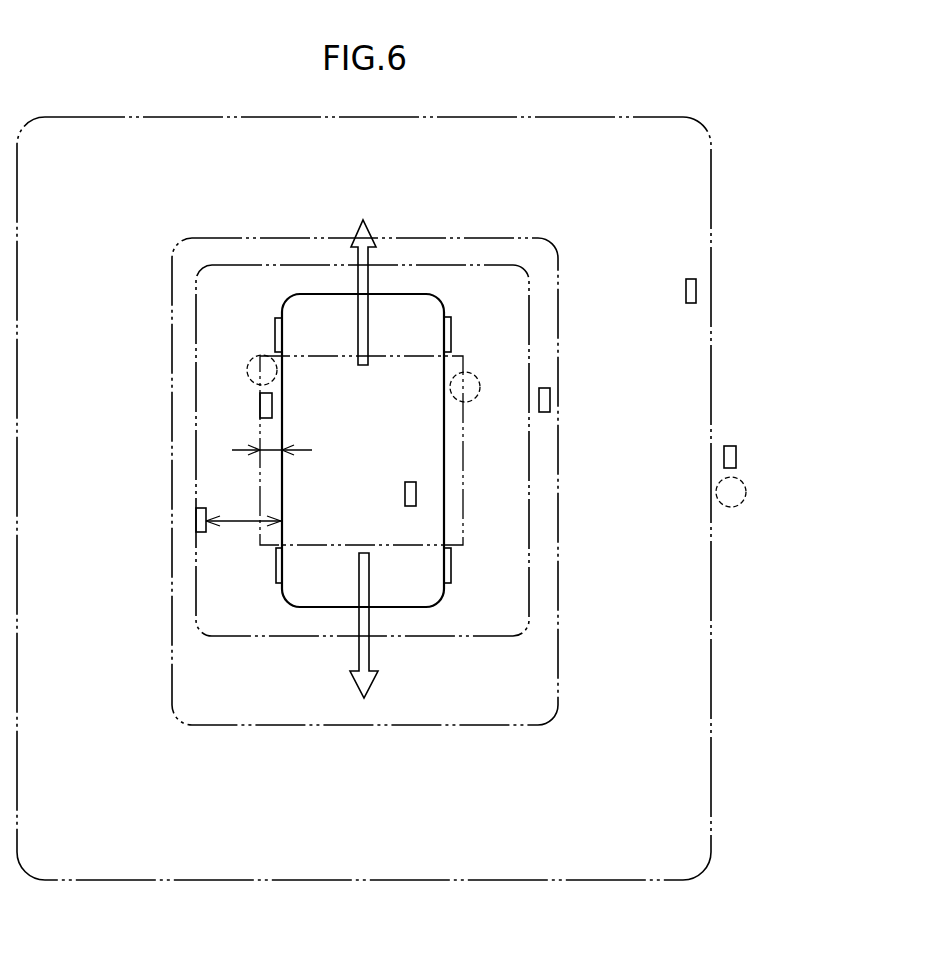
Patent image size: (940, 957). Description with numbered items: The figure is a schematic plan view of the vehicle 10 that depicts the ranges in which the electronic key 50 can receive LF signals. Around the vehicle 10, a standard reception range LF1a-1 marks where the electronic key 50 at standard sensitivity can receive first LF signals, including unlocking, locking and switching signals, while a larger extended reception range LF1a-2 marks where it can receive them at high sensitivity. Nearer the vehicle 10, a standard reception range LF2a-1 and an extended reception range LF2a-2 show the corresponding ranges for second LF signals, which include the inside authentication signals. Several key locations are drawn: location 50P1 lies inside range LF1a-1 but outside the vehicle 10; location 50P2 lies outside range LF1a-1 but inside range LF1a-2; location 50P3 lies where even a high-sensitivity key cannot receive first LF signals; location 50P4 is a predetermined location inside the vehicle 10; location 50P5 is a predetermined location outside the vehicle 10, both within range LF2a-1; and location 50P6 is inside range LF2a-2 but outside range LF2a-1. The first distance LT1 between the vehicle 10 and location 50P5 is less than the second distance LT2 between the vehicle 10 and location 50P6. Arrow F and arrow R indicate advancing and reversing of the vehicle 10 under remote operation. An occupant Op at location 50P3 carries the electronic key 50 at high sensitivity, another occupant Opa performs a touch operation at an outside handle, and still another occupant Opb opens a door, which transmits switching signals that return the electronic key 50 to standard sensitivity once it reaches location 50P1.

The vehicle 10 is at (402, 305).
The standard reception range LF1a-1 is at (558, 334).
The extended reception range LF1a-2 is at (711, 183).
The standard reception range LF2a-1 is at (377, 475).
The extended reception range LF2a-2 is at (512, 637).
The electronic key 50 is at (467, 424).
The location 50P1 is at (550, 400).
The location 50P2 is at (696, 289).
The location 50P3 is at (736, 457).
The location 50P4 is at (416, 493).
The location 50P5 is at (258, 407).
The location 50P6 is at (196, 521).
The occupant Opa is at (473, 376).
The occupant Opb is at (256, 357).
The occupant Op is at (745, 498).
The first distance LT1 is at (273, 455).
The second distance LT2 is at (240, 525).
The arrow F is at (356, 251).
The arrow R is at (358, 652).